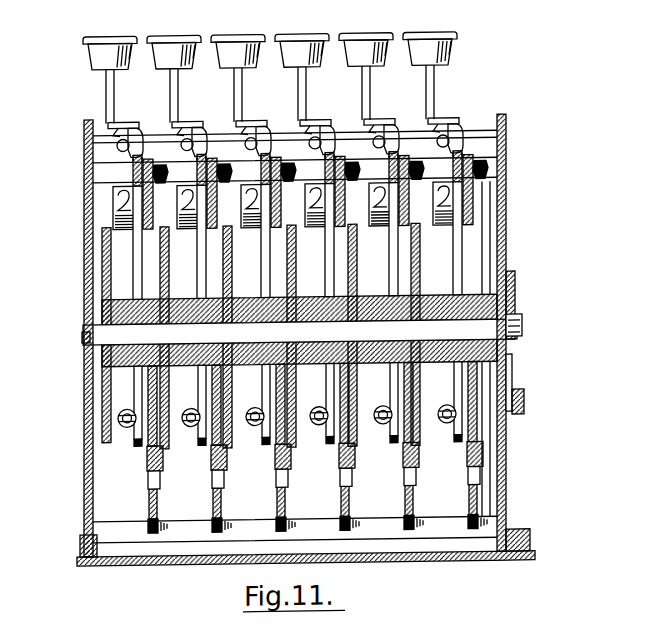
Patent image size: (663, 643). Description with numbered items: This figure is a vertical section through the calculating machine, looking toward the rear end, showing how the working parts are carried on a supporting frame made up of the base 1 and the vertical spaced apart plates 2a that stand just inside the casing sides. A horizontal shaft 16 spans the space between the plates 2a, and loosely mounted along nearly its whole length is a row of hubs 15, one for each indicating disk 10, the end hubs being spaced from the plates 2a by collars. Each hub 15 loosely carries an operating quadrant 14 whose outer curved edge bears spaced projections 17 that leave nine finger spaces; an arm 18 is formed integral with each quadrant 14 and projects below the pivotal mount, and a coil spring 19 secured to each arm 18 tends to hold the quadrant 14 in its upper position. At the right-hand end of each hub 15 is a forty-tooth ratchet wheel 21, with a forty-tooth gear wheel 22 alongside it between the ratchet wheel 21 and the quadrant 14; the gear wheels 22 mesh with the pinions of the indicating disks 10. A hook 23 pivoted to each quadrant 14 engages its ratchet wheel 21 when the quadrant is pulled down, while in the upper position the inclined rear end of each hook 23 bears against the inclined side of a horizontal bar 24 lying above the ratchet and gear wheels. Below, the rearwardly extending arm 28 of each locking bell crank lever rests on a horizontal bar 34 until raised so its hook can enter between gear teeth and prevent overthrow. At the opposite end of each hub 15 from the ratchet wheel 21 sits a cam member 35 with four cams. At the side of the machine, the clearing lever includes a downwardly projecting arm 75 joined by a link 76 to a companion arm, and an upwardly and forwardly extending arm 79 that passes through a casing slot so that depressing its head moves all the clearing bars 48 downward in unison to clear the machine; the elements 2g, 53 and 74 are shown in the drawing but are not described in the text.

The base 1 is at (214, 566).
The vertical spaced apart plates 2a is at (508, 475).
The left side frame 2g is at (91, 445).
The indicating disks 10 is at (177, 127).
The operating quadrant 14 is at (135, 244).
The hub 15 is at (100, 388).
The horizontal shaft 16 is at (103, 336).
The spaced projections 17 is at (185, 132).
The arm 18 is at (147, 433).
The coil spring 19 is at (125, 410).
The ratchet wheel 21 is at (471, 243).
The gear wheel 22 is at (461, 266).
The hook 23 is at (467, 158).
The horizontal bar 24 is at (503, 191).
The rearwardly extending arm 28 is at (160, 540).
The horizontal bar 34 is at (190, 537).
The cam member 35 is at (110, 417).
The clearing bars 48 is at (117, 79).
The key knob 53 is at (170, 26).
The adjusting nut 74 is at (523, 329).
The downwardly projecting arm 75 is at (513, 380).
The link 76 is at (518, 420).
The upwardly and forwardly extending arm 79 is at (515, 283).